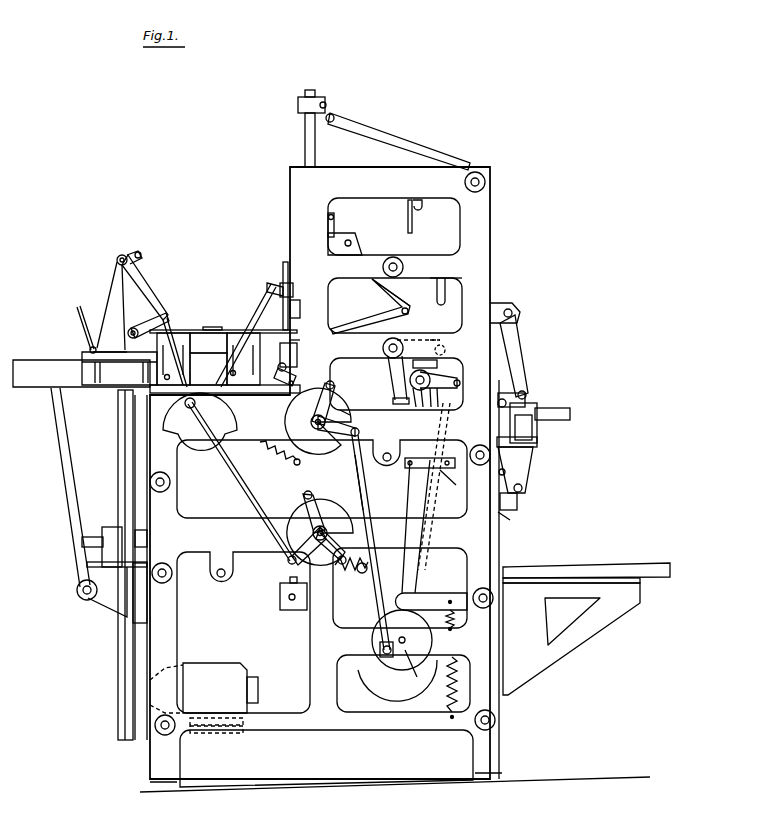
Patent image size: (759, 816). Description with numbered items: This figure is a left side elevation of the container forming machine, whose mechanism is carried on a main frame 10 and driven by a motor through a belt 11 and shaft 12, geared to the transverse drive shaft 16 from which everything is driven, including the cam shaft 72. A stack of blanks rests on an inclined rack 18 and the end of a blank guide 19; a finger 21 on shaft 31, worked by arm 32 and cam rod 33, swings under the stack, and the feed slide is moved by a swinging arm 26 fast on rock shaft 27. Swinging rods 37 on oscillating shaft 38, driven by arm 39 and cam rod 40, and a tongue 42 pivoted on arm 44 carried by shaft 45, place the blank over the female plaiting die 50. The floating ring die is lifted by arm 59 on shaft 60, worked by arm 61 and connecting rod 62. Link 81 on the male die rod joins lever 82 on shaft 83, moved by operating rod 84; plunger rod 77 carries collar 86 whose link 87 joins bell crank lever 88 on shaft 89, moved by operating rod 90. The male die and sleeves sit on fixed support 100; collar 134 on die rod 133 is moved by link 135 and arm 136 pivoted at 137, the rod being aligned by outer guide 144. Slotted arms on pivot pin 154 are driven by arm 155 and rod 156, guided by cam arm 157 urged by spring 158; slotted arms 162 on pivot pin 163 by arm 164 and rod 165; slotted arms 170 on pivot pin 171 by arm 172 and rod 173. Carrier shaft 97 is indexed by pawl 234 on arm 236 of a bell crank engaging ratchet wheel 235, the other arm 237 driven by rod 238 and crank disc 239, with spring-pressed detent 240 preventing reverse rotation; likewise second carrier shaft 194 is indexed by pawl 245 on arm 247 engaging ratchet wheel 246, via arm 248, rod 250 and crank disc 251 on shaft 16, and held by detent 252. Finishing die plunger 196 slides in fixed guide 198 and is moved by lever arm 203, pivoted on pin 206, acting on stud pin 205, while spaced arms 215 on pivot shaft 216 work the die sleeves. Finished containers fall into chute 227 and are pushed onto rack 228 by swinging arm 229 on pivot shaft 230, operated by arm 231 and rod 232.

The main frame 10 is at (487, 226).
The belt 11 is at (135, 655).
The shaft 12 is at (118, 432).
The transverse drive shaft 16 is at (195, 422).
The inclined rack 18 is at (88, 315).
The blank guide 19 is at (200, 327).
The finger 21 is at (160, 290).
The swinging arm 26 is at (55, 436).
The rock shaft 27 is at (85, 600).
The shaft 31 is at (125, 255).
The arm 32 is at (143, 253).
The cam rod 33 is at (152, 260).
The swinging rods 37 is at (283, 275).
The oscillating shaft 38 is at (292, 283).
The arm 39 is at (275, 283).
The cam rod 40 is at (263, 305).
The tongue 42 is at (380, 321).
The arm 44 is at (405, 302).
The shaft 45 is at (352, 243).
The female plaiting die 50 is at (300, 315).
The arm 59 is at (297, 356).
The shaft 60 is at (296, 340).
The arm 61 is at (280, 364).
The connecting rod 62 is at (282, 376).
The cam shaft 72 is at (418, 677).
The rod 77 is at (305, 149).
The link 81 is at (336, 228).
The lever 82 is at (440, 278).
The shaft 83 is at (402, 262).
The operating rod 84 is at (447, 296).
The collar 86 is at (318, 100).
The link 87 is at (333, 108).
The bell crank lever 88 is at (388, 141).
The shaft 89 is at (487, 181).
The operating rod 90 is at (414, 226).
The carrier shaft 97 is at (393, 404).
The fixed support 100 is at (537, 445).
The rod 133 is at (565, 408).
The collar 134 is at (530, 402).
The link 135 is at (510, 393).
The arm 136 is at (522, 356).
The pivot 137 is at (515, 313).
The outer guide 144 is at (537, 425).
The pivot pin 154 is at (456, 466).
The arm 155 is at (455, 485).
The rod 156 is at (430, 522).
The cam arm 157 is at (425, 595).
The spring 158 is at (462, 660).
The slotted arms 162 is at (420, 408).
The pivot pin 163 is at (440, 370).
The arm 164 is at (460, 384).
The rod 165 is at (440, 403).
The slotted arms 170 is at (395, 390).
The pivot pin 171 is at (400, 340).
The arm 172 is at (437, 340).
The rod 173 is at (446, 352).
The shaft 194 is at (370, 545).
The plunger 196 is at (82, 543).
The fixed guide 198 is at (77, 590).
The lever arm 203 is at (147, 540).
The stud pin 205 is at (150, 566).
The pin 206 is at (160, 492).
The spaced arms 215 is at (290, 578).
The pivot shaft 216 is at (280, 600).
The chute 227 is at (520, 566).
The rack 228 is at (612, 565).
The swinging arm 229 is at (518, 503).
The pivot shaft 230 is at (523, 488).
The arm 231 is at (530, 465).
The rod 232 is at (512, 520).
The pawl 234 is at (356, 412).
The ratchet wheel 235 is at (340, 405).
The arm 236 is at (334, 384).
The arm 237 is at (360, 432).
The rod 238 is at (364, 492).
The crank disc 239 is at (432, 638).
The spring-pressed detent 240 is at (288, 434).
The pawl 245 is at (300, 510).
The ratchet wheel 246 is at (368, 512).
The arm 247 is at (268, 535).
The arm 248 is at (275, 553).
The rod 250 is at (262, 512).
The crank disc 251 is at (215, 380).
The spring-pressed detent 252 is at (360, 582).